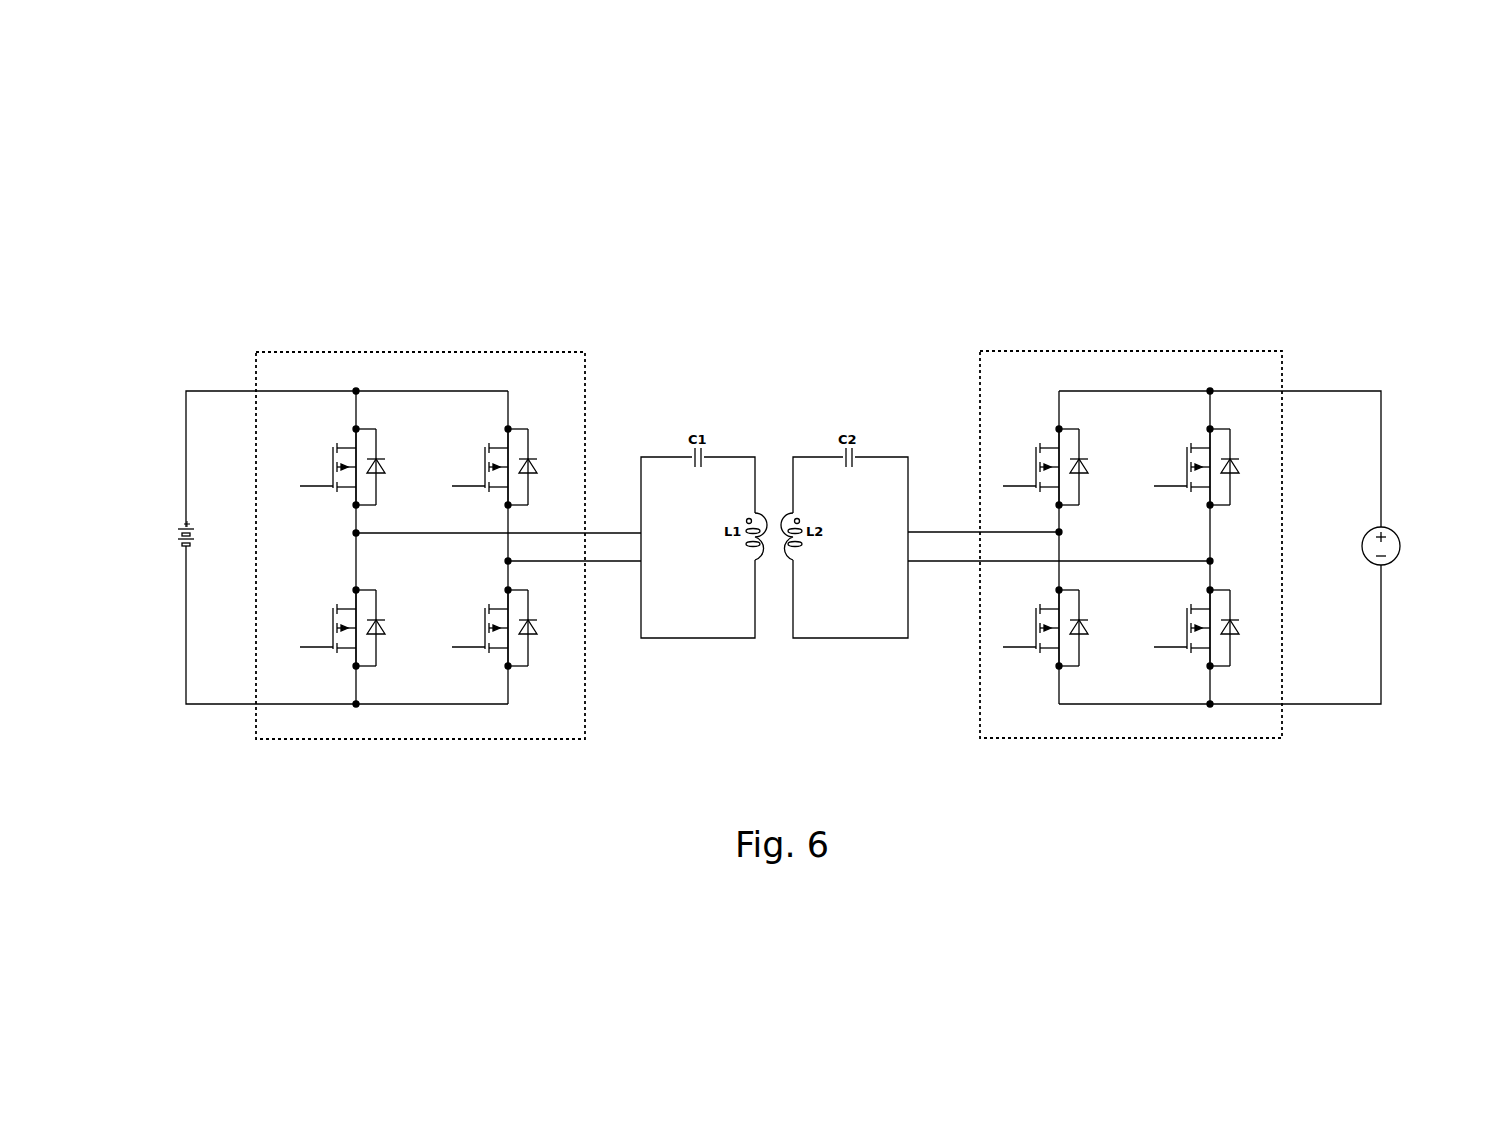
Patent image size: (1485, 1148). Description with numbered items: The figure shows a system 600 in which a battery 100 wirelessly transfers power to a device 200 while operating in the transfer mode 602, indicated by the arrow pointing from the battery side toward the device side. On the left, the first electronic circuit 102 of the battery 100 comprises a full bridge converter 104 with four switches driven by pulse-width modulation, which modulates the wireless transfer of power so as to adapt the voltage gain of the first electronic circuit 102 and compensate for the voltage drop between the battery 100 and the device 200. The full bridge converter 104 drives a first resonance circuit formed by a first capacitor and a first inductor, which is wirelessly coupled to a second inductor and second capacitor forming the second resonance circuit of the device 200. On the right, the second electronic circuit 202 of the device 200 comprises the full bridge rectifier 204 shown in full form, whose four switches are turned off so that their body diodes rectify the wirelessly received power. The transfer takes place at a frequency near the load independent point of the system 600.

The battery 100 is at (228, 547).
The first electronic circuit 102 is at (457, 541).
The full bridge converter 104 is at (345, 352).
The device 200 is at (1341, 547).
The second electronic circuit 202 is at (1087, 541).
The full bridge rectifier 204 is at (1173, 351).
The system 600 is at (1126, 222).
The transfer mode 602 is at (893, 327).